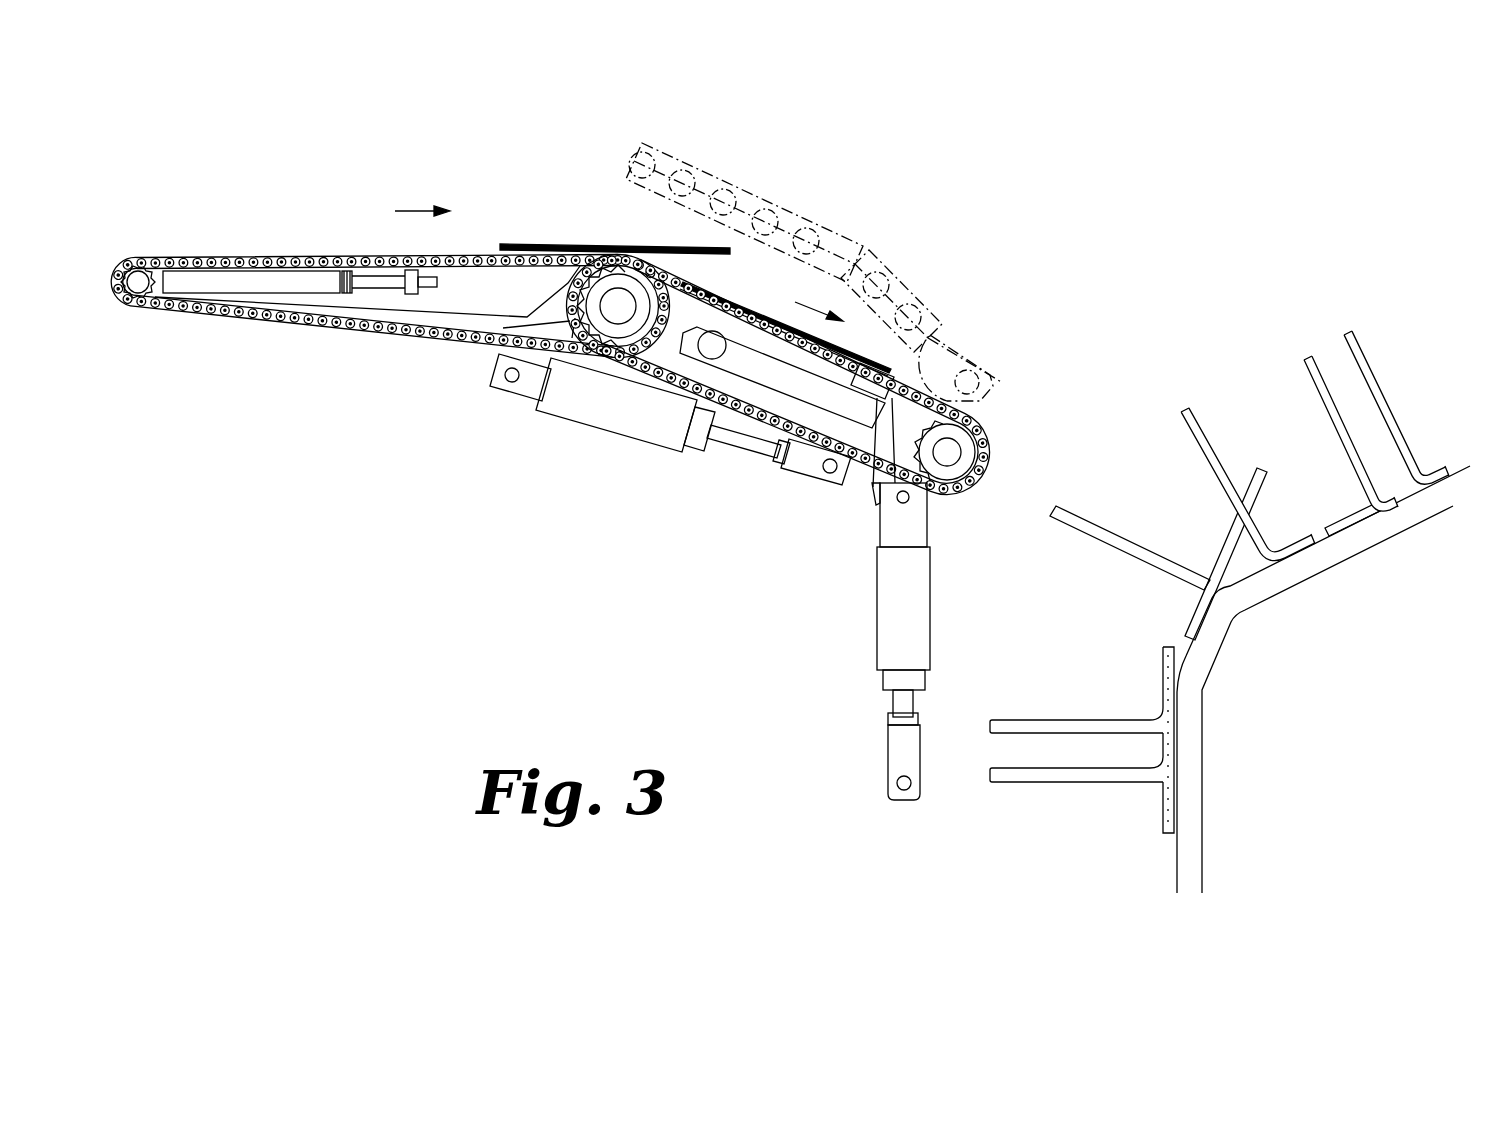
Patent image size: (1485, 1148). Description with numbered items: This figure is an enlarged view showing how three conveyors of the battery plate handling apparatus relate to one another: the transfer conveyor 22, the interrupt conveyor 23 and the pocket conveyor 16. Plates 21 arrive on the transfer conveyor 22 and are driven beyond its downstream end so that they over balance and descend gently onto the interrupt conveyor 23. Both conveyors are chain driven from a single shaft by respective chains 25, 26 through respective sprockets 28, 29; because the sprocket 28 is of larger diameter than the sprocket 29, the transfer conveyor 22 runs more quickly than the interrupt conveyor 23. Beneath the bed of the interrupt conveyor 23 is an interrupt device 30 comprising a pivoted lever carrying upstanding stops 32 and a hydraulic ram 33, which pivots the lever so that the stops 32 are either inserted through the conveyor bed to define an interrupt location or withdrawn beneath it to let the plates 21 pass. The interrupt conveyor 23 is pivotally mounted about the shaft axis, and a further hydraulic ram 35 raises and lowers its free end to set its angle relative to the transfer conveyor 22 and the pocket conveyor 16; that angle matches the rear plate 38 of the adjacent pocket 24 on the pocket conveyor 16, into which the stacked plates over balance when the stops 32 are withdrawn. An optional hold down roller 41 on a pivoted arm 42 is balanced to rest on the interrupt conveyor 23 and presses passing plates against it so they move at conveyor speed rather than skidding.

The pocket conveyor 16 is at (1115, 831).
The plates 21 is at (565, 243).
The transfer conveyor 22 is at (233, 227).
The interrupt conveyor 23 is at (747, 275).
The pocket 24 is at (1139, 440).
The chain 25 is at (227, 313).
The chain 26 is at (990, 457).
The sprocket 28 is at (487, 340).
The sprocket 29 is at (637, 353).
The interrupt device 30 is at (748, 486).
The stops 32 is at (932, 350).
The hydraulic ram 33 is at (583, 407).
The hydraulic ram 35 is at (893, 623).
The rear plate 38 is at (1087, 523).
The hold down roller 41 is at (1012, 378).
The pivoted arm 42 is at (807, 217).